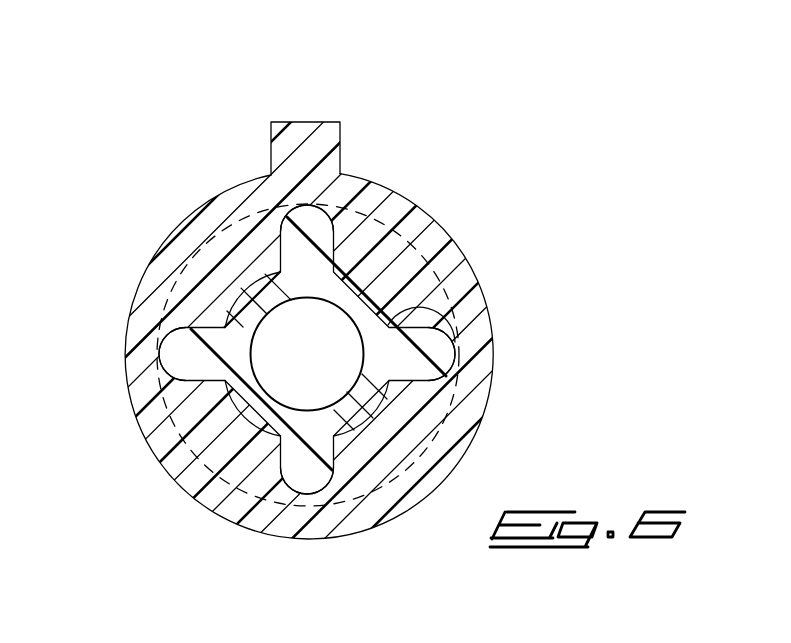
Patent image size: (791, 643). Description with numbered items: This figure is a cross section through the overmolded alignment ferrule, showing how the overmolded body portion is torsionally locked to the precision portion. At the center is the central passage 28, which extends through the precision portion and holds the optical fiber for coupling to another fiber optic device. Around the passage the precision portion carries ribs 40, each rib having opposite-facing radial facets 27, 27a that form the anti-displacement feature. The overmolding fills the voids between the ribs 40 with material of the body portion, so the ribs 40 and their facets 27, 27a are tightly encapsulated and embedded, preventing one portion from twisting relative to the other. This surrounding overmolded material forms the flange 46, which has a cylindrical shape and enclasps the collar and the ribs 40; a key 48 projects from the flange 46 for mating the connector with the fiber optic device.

The flange 46 is at (455, 255).
The key 48 is at (310, 121).
The radial facet 27 is at (334, 247).
The radial facet 27a is at (283, 253).
The rib 40 is at (312, 201).
The central passage 28 is at (319, 368).